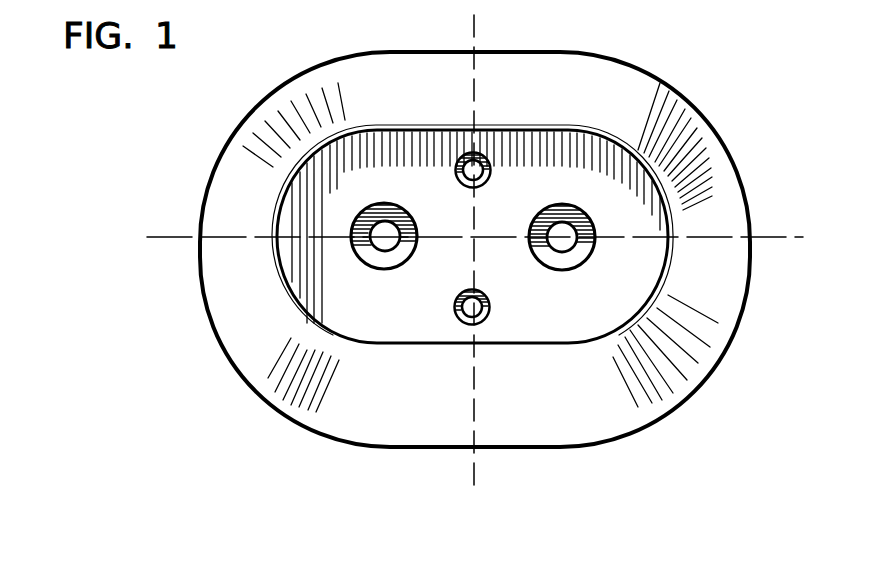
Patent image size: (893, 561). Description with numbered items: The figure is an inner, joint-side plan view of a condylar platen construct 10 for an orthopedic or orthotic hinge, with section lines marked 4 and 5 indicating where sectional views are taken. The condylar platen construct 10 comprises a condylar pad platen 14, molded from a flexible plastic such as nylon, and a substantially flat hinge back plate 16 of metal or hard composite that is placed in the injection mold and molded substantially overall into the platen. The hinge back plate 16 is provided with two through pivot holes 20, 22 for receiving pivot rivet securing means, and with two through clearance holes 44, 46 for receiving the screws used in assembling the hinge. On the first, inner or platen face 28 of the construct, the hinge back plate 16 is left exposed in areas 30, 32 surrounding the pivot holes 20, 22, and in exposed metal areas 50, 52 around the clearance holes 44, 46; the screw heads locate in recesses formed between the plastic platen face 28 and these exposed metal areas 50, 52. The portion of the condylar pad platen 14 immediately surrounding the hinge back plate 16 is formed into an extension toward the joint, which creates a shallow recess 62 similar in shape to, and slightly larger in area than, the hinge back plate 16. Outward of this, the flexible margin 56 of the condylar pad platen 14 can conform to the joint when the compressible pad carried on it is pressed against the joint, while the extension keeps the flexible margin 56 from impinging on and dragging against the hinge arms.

The condylar platen construct 10 is at (268, 135).
The condylar pad platen 14 is at (266, 158).
The hinge back plate 16 is at (360, 249).
The pivot hole 20 is at (389, 252).
The pivot hole 22 is at (580, 250).
The first, inner or platen face 28 is at (366, 264).
The exposed area 30 is at (372, 258).
The exposed area 32 is at (578, 257).
The clearance hole 44 is at (457, 160).
The clearance hole 46 is at (484, 317).
The exposed metal area 50 is at (457, 172).
The exposed metal area 52 is at (454, 317).
The flexible margin 56 is at (252, 262).
The shallow recess 62 is at (573, 183).
The section line 4- 4 is at (163, 215).
The section line 5- 5 is at (505, 25).